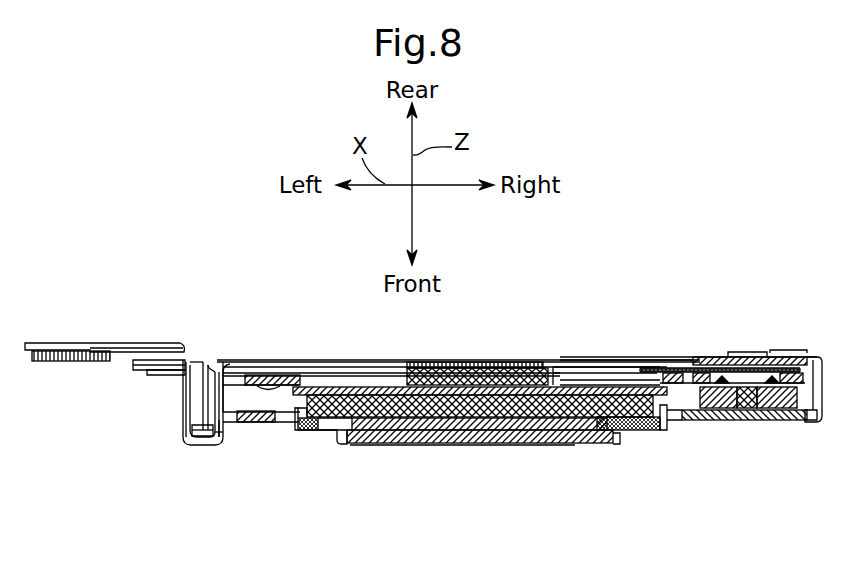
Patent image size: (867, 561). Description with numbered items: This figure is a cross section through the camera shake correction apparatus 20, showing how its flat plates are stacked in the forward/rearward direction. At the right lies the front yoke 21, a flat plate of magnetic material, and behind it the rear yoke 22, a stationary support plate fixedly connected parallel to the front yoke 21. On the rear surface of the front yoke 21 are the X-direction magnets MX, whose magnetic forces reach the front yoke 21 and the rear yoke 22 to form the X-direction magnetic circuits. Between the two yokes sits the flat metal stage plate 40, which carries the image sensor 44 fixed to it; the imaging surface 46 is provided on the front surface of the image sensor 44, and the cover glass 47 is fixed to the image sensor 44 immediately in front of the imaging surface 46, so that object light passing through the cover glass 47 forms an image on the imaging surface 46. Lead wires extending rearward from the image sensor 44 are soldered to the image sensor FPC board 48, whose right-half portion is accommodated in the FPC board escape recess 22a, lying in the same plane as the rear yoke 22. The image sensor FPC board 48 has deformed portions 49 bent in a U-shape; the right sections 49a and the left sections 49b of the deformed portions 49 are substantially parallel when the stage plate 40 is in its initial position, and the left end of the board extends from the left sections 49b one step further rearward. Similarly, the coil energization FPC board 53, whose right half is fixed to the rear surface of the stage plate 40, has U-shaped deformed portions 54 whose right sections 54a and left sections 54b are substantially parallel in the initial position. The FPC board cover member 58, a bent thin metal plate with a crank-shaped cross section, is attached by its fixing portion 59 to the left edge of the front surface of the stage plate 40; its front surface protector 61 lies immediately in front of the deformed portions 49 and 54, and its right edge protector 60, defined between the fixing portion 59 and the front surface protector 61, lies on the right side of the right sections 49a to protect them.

The camera shake correction apparatus 20 is at (751, 312).
The front yoke 21 is at (720, 440).
The rear yoke 22 is at (707, 352).
The FPC board escape recess 22a is at (640, 352).
The stage plate 40 is at (285, 360).
The image sensor 44 is at (582, 355).
The imaging surface 46 is at (435, 430).
The cover glass 47 is at (572, 442).
The image sensor FPC board 48 is at (325, 360).
The deformed portions 49 is at (185, 445).
The right sections 49a is at (220, 398).
The left sections 49b is at (183, 405).
The coil energization FPC board 53 is at (135, 342).
The deformed portions 54 is at (203, 363).
The right sections 54a is at (211, 362).
The left sections 54b is at (192, 360).
The FPC board cover member 58 is at (190, 450).
The fixing portion 59 is at (250, 360).
The right edge protector 60 is at (223, 445).
The front surface protector 61 is at (202, 430).
The X-direction magnets MX is at (787, 440).